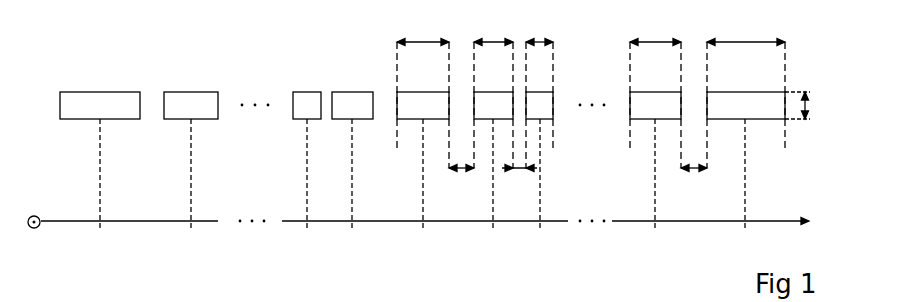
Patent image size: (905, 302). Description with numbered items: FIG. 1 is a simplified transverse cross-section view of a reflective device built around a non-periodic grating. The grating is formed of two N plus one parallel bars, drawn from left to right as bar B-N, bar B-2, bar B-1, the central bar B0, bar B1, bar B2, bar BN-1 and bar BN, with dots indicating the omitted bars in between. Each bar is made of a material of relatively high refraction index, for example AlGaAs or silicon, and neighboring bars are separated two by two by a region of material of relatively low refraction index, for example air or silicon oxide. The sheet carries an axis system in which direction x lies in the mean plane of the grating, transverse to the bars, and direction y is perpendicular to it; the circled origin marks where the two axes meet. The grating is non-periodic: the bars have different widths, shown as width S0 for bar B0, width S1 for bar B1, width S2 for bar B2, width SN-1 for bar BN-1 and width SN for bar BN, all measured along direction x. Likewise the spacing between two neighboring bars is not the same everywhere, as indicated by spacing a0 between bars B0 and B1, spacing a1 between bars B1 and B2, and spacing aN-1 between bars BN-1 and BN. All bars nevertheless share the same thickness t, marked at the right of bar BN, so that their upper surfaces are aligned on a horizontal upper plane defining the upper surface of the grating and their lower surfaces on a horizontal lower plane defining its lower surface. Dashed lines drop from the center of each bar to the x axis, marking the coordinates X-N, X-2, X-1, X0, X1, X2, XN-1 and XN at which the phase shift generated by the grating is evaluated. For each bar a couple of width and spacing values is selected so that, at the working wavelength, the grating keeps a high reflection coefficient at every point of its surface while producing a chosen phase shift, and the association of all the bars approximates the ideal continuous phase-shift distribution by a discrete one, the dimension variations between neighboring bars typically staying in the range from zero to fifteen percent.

The direction x is at (426, 164).
The direction y is at (38, 216).
The bar B-N is at (100, 160).
The bar B-2 is at (307, 160).
The bar B-1 is at (352, 160).
The bar B0 is at (423, 160).
The bar B1 is at (493, 160).
The bar B2 is at (539, 160).
The bar BN-1 is at (655, 160).
The bar BN is at (746, 160).
The coordinate X-N is at (95, 247).
The coordinate X-2 is at (297, 247).
The coordinate X-1 is at (352, 247).
The coordinate X0 is at (417, 247).
The coordinate X1 is at (489, 247).
The coordinate X2 is at (539, 247).
The coordinate XN-1 is at (661, 247).
The coordinate XN is at (738, 247).
The width S0 is at (432, 41).
The width S1 is at (492, 41).
The width S2 is at (535, 41).
The width SN-1 is at (650, 41).
The width SN is at (745, 41).
The spacing a0 is at (462, 170).
The spacing a1 is at (518, 170).
The spacing aN-1 is at (694, 170).
The thickness t is at (807, 103).